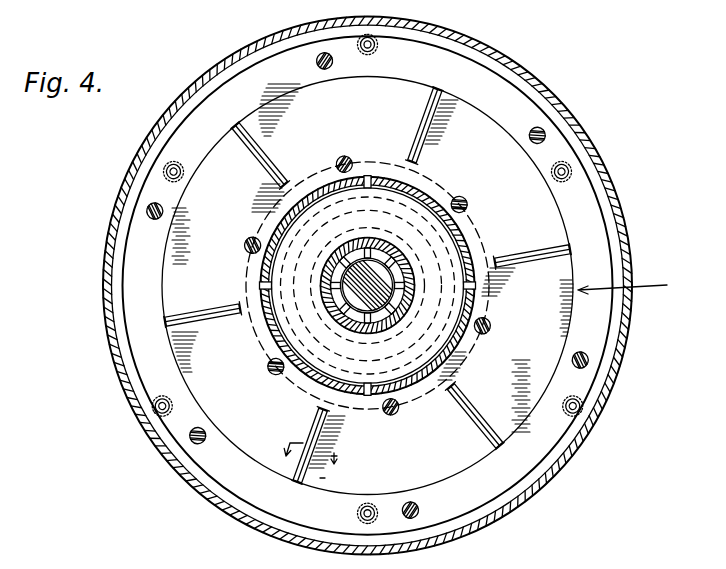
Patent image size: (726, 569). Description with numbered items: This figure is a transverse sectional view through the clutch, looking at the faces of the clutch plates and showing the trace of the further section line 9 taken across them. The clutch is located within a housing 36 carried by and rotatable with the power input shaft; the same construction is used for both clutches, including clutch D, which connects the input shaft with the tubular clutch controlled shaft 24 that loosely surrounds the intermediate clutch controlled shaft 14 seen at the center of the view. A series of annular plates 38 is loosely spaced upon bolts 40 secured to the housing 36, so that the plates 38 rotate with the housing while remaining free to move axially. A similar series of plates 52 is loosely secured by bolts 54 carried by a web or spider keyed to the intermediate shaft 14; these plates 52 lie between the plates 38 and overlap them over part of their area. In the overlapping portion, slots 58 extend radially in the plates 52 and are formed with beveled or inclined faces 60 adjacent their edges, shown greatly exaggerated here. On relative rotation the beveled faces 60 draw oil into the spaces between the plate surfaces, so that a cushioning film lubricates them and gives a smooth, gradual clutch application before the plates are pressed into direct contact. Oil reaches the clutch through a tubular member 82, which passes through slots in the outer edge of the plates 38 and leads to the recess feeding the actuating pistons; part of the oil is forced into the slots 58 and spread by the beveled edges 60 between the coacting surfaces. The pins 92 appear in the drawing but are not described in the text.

The intermediate clutch controlled shaft 14 is at (390, 289).
The tubular clutch controlled shaft 24 is at (330, 303).
The housing 36 is at (632, 372).
The annular plates 38 is at (445, 33).
The bolts 40 is at (316, 62).
The plates 52 is at (477, 120).
The bolts 54 is at (348, 155).
The slots 58 is at (439, 88).
The beveled or inclined faces 60 is at (236, 128).
The tubular member 82 is at (374, 53).
The pins 92 is at (183, 176).
The section line 9- 9 is at (308, 467).
The clutch D is at (631, 284).